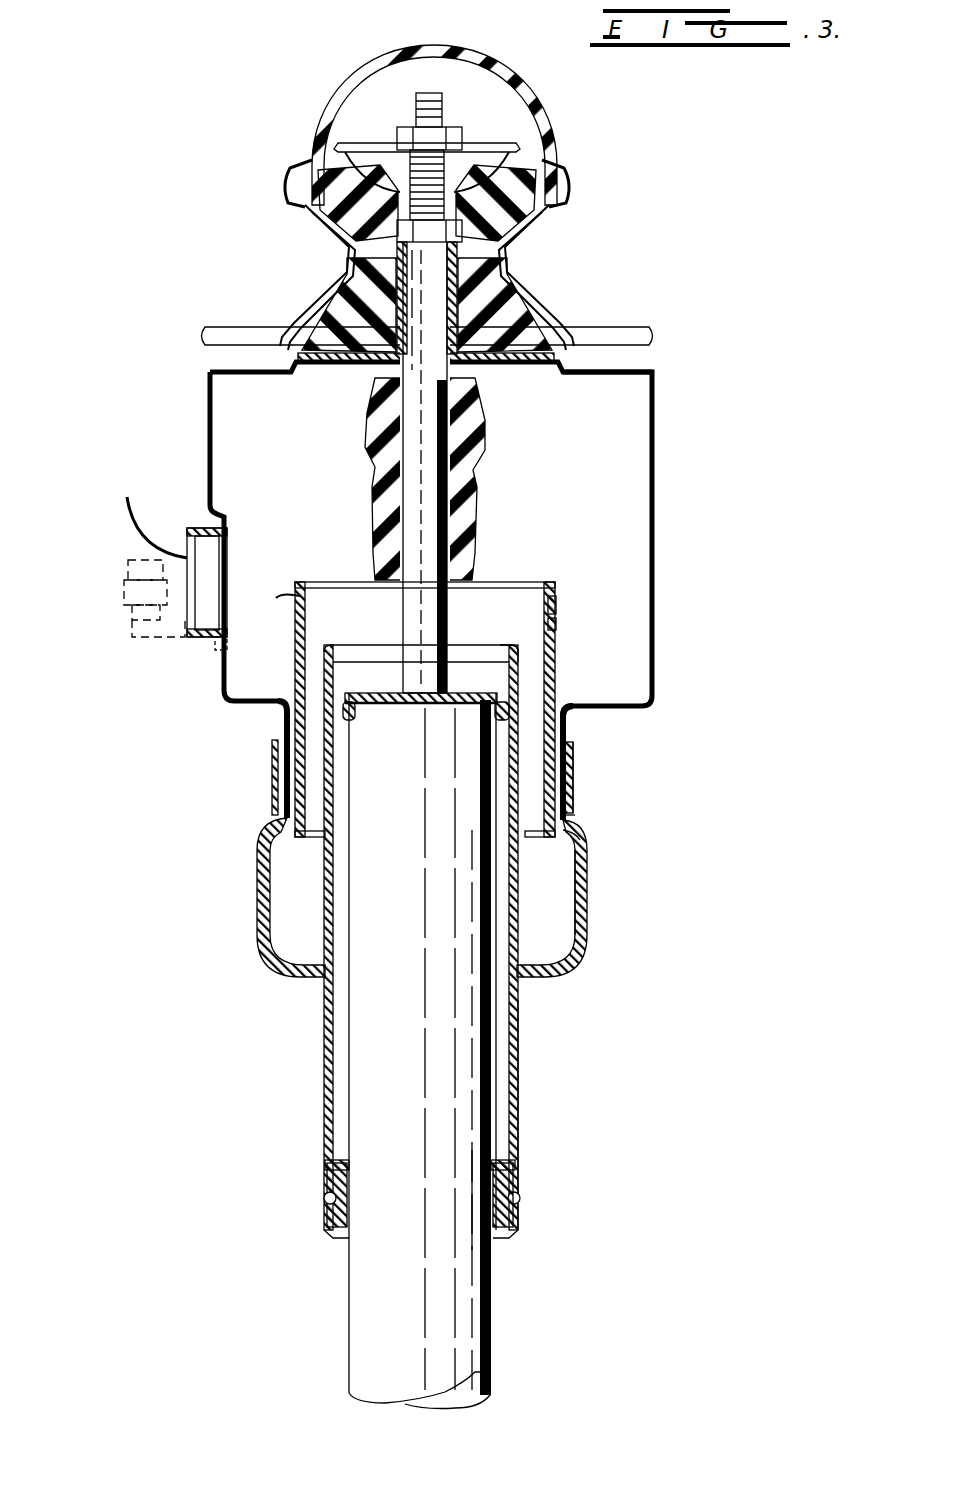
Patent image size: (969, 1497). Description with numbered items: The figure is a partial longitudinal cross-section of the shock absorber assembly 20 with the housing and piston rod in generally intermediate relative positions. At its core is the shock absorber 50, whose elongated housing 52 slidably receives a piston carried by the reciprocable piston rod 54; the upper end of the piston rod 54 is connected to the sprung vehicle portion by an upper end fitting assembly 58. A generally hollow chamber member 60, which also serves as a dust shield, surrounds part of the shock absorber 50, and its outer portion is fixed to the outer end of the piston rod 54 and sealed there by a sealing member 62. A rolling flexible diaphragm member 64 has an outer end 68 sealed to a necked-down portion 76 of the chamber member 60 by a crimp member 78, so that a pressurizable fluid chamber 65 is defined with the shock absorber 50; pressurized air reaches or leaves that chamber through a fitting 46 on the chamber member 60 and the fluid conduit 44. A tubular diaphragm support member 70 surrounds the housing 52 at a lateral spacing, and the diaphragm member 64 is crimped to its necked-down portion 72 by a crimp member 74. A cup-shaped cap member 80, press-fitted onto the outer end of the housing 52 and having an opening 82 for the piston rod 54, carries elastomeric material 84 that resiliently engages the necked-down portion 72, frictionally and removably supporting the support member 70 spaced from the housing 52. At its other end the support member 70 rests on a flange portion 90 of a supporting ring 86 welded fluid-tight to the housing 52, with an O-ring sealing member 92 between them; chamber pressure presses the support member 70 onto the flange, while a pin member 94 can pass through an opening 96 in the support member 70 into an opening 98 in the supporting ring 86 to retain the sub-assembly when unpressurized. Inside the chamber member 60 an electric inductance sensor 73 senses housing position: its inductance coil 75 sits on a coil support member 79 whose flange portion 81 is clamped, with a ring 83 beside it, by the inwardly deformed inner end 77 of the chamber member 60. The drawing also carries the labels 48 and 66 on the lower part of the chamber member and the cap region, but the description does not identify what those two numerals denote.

The shock absorber assembly 20 is at (702, 507).
The fluid conduit 44 is at (187, 567).
The fitting 46 is at (186, 641).
The lower bracket 48 is at (664, 672).
The shock absorber 50 is at (462, 1063).
The housing 52 is at (372, 1012).
The piston rod 54 is at (437, 447).
The upper end fitting assembly 58 is at (522, 316).
The chamber member 60 is at (662, 572).
The sealing member 62 is at (413, 383).
The rolling flexible diaphragm member 64 is at (594, 887).
The pressurizable fluid chamber 65 is at (615, 462).
The cap 66 is at (516, 660).
The outer end 68 is at (590, 737).
The diaphragm support member 70 is at (524, 1103).
The necked-down portion 72 is at (340, 660).
The electric inductance sensor 73 is at (558, 597).
The crimp member 74 is at (530, 700).
The electrical inductance coil 75 is at (556, 612).
The necked-down portion 76 is at (578, 757).
The longitudinally inner end 77 is at (580, 830).
The crimp member 78 is at (575, 780).
The coil support member 79 is at (560, 630).
The cap member 80 is at (350, 716).
The flange portion 81 is at (552, 836).
The opening 82 is at (436, 707).
The ring 83 is at (572, 815).
The elastomeric material 84 is at (494, 717).
The supporting ring 86 is at (478, 1222).
The flange portion 90 is at (508, 1224).
The sealing member 92 is at (510, 1178).
The pin member 94 is at (323, 1196).
The opening 96 is at (326, 1198).
The opening 98 is at (335, 1193).